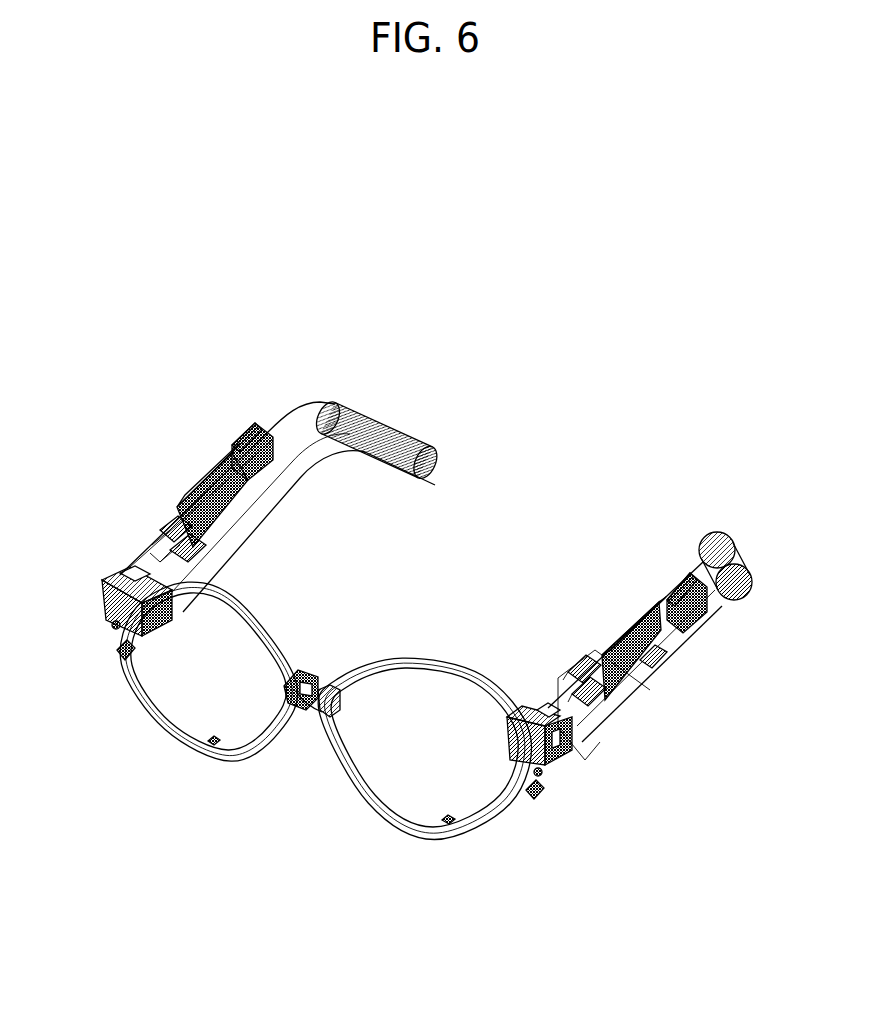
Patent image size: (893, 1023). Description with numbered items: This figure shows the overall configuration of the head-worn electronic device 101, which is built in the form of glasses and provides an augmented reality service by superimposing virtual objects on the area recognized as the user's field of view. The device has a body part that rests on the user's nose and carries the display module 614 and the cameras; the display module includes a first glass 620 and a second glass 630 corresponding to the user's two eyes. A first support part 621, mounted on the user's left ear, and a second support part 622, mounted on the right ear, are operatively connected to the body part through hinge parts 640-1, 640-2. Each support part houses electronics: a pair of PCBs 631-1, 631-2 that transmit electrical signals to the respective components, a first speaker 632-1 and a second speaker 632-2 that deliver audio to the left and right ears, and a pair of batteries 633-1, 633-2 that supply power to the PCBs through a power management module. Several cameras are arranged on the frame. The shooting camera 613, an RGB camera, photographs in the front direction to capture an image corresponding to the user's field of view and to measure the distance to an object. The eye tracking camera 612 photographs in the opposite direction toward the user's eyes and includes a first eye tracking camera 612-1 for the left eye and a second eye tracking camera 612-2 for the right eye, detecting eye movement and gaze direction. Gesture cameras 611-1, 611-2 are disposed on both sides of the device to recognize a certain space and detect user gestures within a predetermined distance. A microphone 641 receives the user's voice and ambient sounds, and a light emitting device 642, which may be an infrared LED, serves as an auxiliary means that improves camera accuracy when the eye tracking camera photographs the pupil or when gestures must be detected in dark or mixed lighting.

The electronic device 101 is at (609, 385).
The gesture camera 611-1 is at (548, 800).
The gesture camera 611-2 is at (115, 650).
The eye tracking camera 612 is at (332, 642).
The first eye tracking camera 612-1 is at (333, 684).
The second eye tracking camera 612-2 is at (302, 670).
The shooting camera 613 is at (300, 704).
The display module 614 is at (106, 572).
The first glass 620 is at (414, 777).
The first support part 621 is at (705, 640).
The second support part 622 is at (266, 505).
The second glass 630 is at (187, 705).
The PCB 631-1 is at (625, 631).
The PCB 631-2 is at (222, 474).
The first speaker 632-1 is at (680, 588).
The second speaker 632-2 is at (254, 433).
The battery 633-1 is at (709, 537).
The battery 633-2 is at (386, 433).
The hinge part 640-1 is at (573, 663).
The hinge part 640-2 is at (165, 518).
The microphone 641 is at (212, 747).
The light emitting device 642 is at (112, 626).